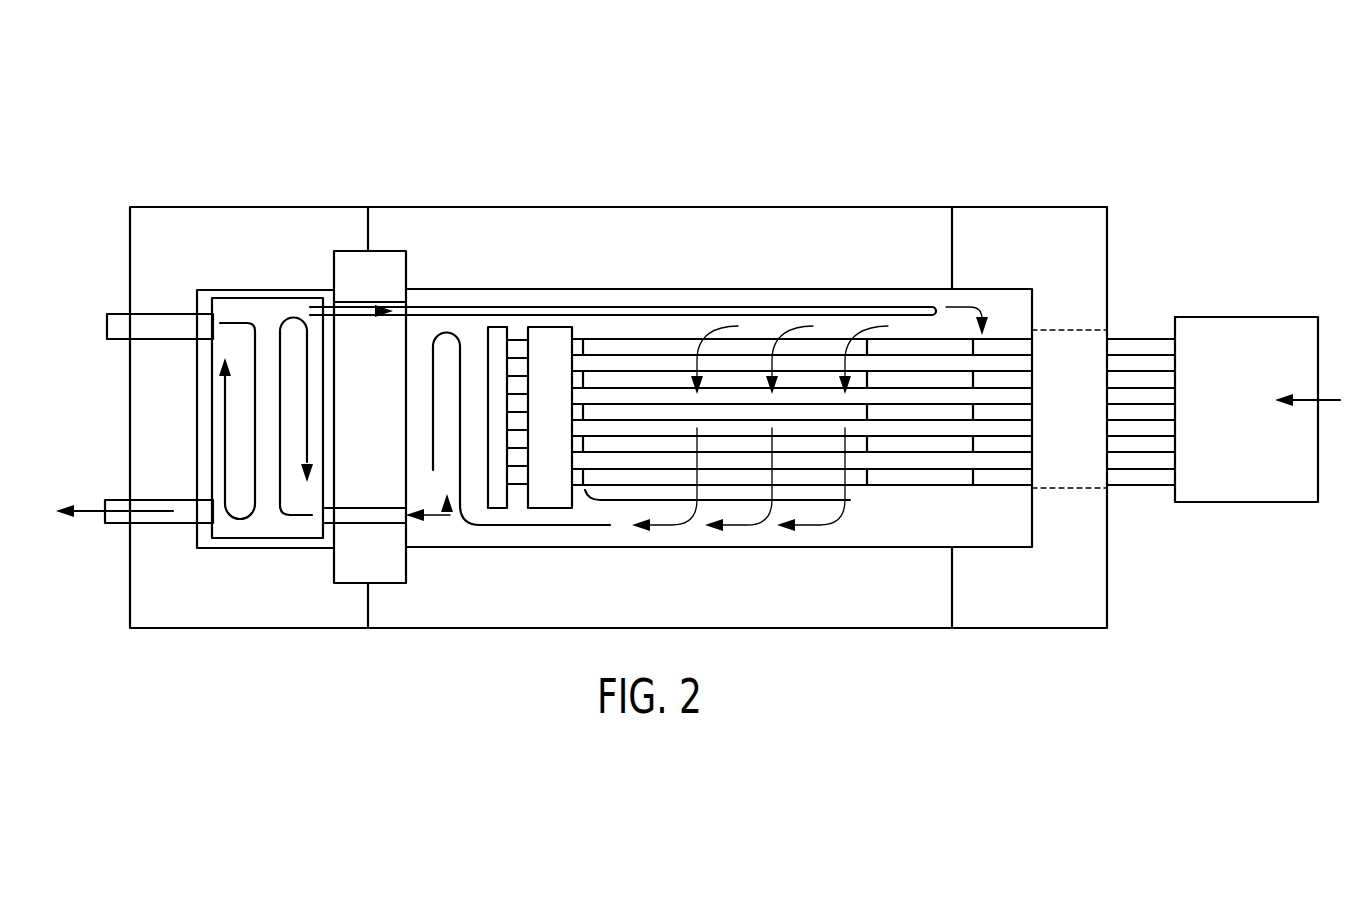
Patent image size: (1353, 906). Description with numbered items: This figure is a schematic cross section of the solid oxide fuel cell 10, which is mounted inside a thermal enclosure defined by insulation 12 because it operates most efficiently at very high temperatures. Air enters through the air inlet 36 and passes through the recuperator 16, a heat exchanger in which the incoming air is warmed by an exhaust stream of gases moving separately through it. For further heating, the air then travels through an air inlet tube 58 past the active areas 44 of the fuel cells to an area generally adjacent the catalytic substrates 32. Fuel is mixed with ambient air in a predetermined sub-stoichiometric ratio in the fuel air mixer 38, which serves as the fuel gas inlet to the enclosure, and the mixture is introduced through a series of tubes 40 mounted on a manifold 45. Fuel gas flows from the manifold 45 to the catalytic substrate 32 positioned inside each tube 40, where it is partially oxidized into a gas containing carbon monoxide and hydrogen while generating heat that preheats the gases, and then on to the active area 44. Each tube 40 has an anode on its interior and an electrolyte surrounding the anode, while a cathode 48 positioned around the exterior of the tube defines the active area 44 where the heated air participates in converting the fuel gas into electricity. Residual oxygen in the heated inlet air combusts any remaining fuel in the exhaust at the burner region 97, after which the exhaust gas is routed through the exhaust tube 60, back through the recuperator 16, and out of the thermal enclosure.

The solid oxide fuel cell 10 is at (632, 477).
The insulation 12 is at (178, 228).
The recuperator 16 is at (279, 262).
The catalytic substrate 32 is at (997, 381).
The air inlet 36 is at (80, 329).
The fuel air mixer 38 is at (1235, 296).
The tube 40 is at (914, 438).
The active area 44 is at (617, 508).
The manifold 45 is at (1048, 360).
The cathode 48 is at (641, 445).
The air inlet tube 58 is at (838, 305).
The exhaust tube 60 is at (152, 527).
The burner region 97 is at (472, 322).